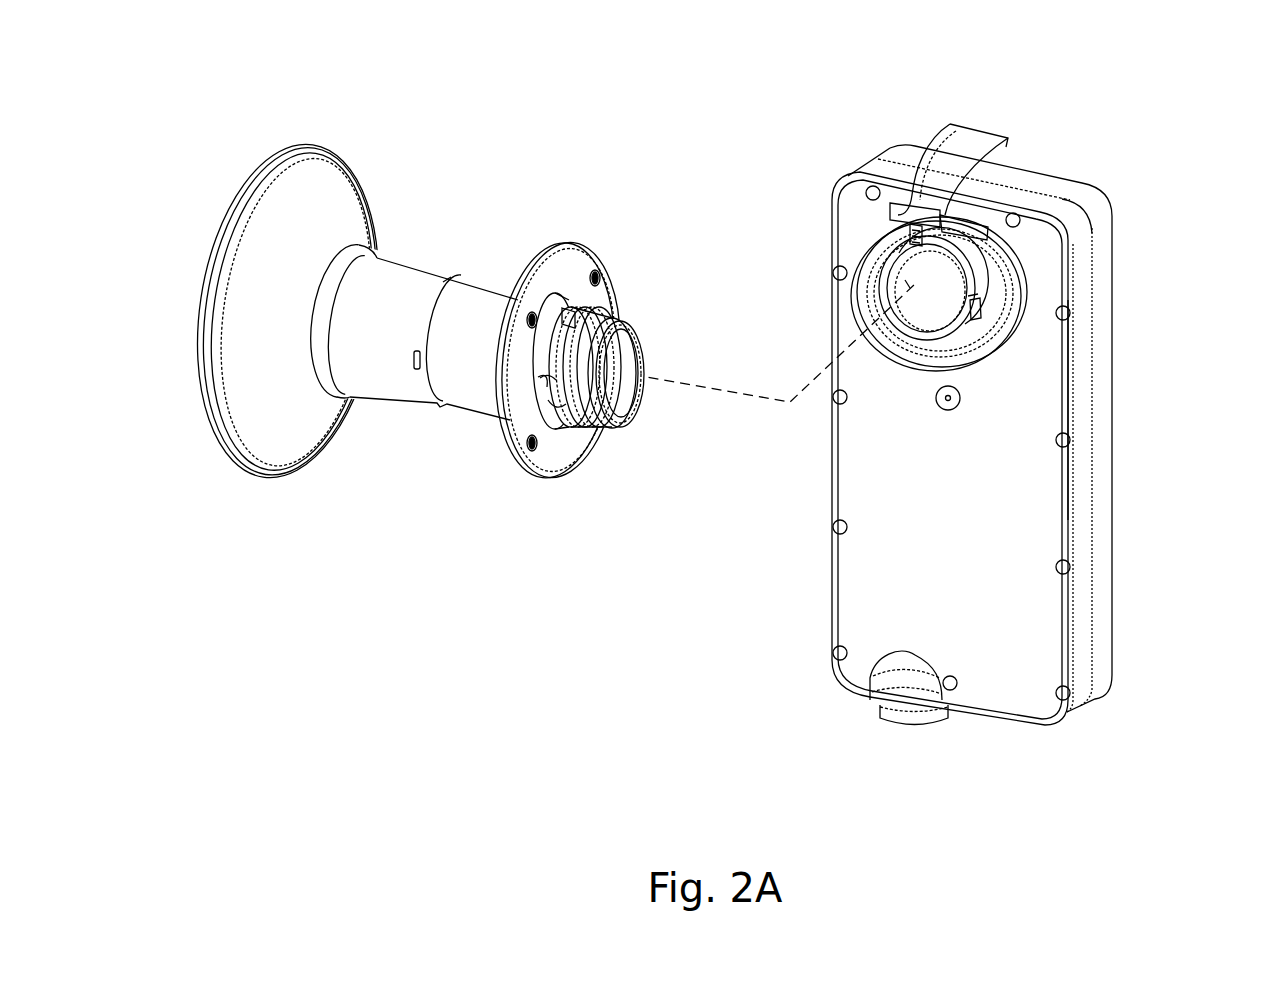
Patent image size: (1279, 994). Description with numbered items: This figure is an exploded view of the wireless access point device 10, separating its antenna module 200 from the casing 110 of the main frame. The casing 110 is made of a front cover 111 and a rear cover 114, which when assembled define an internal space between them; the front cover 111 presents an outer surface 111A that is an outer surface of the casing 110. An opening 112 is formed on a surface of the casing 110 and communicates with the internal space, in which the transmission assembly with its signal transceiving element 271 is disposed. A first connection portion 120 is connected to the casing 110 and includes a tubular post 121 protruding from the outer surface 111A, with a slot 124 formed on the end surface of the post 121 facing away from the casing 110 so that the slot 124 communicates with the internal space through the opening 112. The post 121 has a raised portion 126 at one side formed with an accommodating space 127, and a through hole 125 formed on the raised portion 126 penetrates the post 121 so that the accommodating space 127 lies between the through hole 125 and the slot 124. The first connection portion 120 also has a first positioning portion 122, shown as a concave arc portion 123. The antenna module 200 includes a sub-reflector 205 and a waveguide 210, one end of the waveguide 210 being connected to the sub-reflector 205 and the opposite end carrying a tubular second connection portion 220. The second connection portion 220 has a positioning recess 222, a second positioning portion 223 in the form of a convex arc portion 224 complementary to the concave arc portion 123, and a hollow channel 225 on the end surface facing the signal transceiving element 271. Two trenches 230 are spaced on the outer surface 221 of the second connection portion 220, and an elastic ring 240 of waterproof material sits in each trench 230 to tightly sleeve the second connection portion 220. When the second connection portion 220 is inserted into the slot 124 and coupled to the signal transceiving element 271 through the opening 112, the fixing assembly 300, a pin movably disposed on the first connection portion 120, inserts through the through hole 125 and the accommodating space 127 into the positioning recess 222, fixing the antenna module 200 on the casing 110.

The wireless access point device 10 is at (1238, 63).
The casing 110 is at (1165, 570).
The front cover 111 is at (1097, 594).
The rear cover 114 is at (1103, 625).
The outer surface 111A is at (1033, 410).
The opening 112 is at (925, 322).
The first connection portion 120 is at (967, 235).
The post 121 is at (975, 268).
The first positioning portion 122 is at (985, 306).
The concave arc portion 123 is at (975, 313).
The slot 124 is at (862, 328).
The through hole 125 is at (918, 215).
The raised portion 126 is at (905, 228).
The accommodating space 127 is at (903, 240).
The signal transceiving element 271 is at (905, 285).
The fixing assembly 300 is at (948, 127).
The antenna module 200 is at (518, 563).
The sub-reflector 205 is at (283, 430).
The waveguide 210 is at (462, 390).
The second connection portion 220 is at (580, 427).
The outer surface 221 is at (557, 407).
The positioning recess 222 is at (580, 308).
The second positioning portion 223 is at (552, 371).
The convex arc portion 224 is at (540, 380).
The hollow channel 225 is at (623, 407).
The trench 230 is at (592, 425).
The elastic ring 240 is at (612, 313).